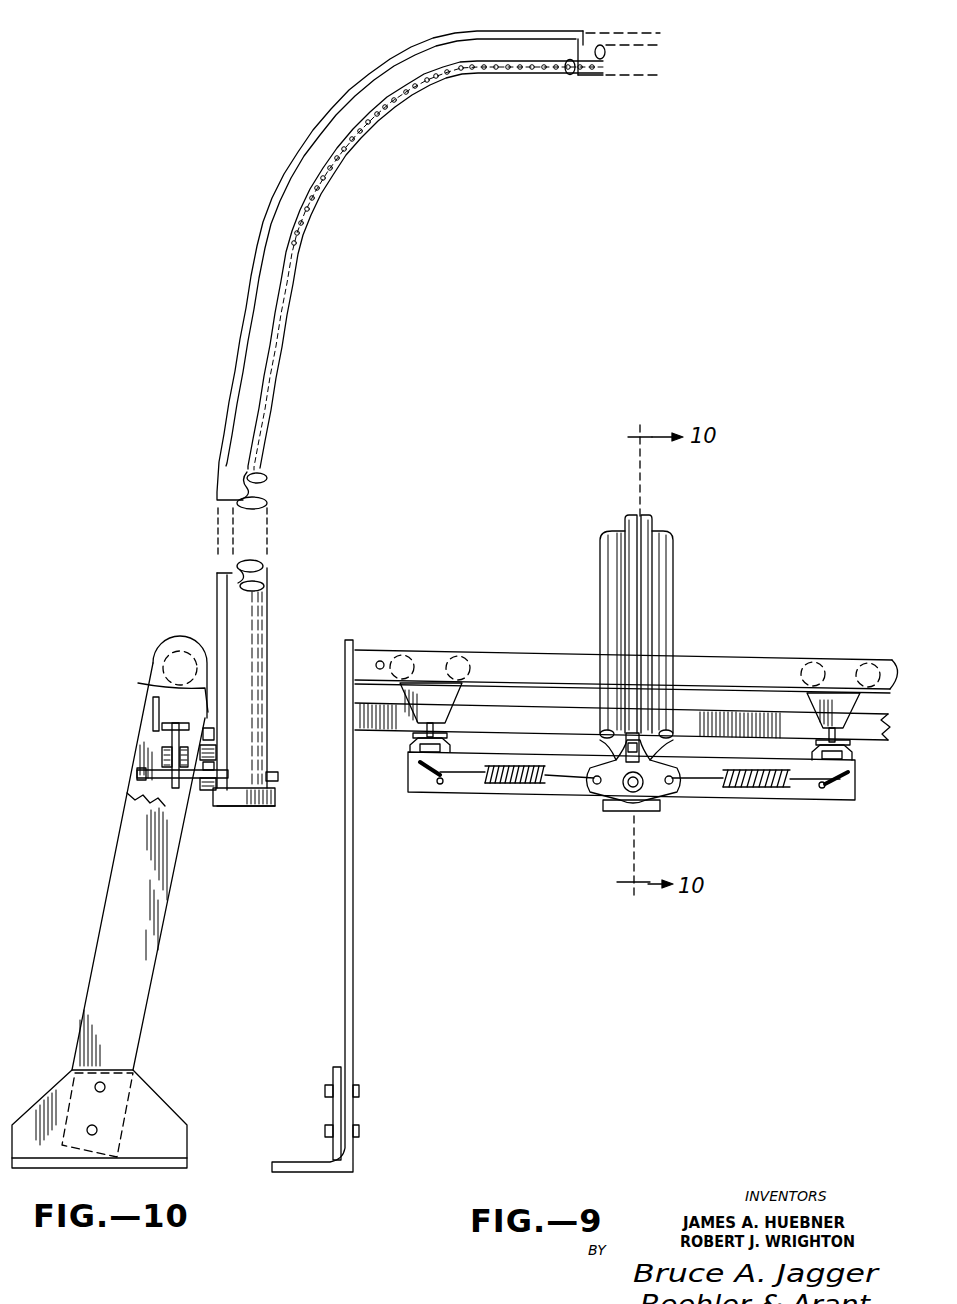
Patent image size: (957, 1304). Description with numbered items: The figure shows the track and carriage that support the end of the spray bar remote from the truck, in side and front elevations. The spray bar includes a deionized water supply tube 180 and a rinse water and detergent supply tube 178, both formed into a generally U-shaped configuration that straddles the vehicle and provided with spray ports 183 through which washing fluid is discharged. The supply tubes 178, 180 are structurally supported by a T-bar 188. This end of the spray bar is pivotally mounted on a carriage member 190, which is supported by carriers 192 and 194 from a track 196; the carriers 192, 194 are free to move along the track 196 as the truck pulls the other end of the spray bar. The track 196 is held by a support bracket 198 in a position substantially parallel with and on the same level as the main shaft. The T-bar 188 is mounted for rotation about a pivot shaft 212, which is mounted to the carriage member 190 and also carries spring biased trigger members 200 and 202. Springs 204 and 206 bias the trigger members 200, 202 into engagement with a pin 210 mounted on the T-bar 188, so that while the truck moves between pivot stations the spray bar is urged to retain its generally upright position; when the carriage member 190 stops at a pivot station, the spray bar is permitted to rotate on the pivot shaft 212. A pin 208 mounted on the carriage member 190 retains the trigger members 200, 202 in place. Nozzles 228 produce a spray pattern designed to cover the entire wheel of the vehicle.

In FIG. 10, the rinse water and detergent supply tube 178 is at (589, 77).
In FIG. 9, the rinse water and detergent supply tube 178 is at (668, 557).
In FIG. 10, the deionized water supply tube 180 is at (536, 74).
In FIG. 9, the deionized water supply tube 180 is at (607, 556).
In FIG. 10, the spray ports 183 is at (580, 78).
In FIG. 10, the T-bar 188 is at (245, 355).
In FIG. 9, the T-bar 188 is at (652, 521).
In FIG. 10, the carriage member 190 is at (138, 735).
In FIG. 9, the carriage member 190 is at (458, 782).
In FIG. 9, the carrier 192 is at (447, 712).
In FIG. 10, the carrier 194 is at (162, 708).
In FIG. 9, the carrier 194 is at (843, 713).
In FIG. 10, the track 196 is at (160, 658).
In FIG. 9, the track 196 is at (688, 667).
In FIG. 10, the support bracket 198 is at (118, 862).
In FIG. 9, the support bracket 198 is at (355, 876).
In FIG. 10, the trigger member 200 is at (223, 753).
In FIG. 9, the trigger member 200 is at (655, 783).
In FIG. 10, the trigger member 202 is at (230, 772).
In FIG. 9, the trigger member 202 is at (602, 784).
In FIG. 9, the spring 204 is at (762, 788).
In FIG. 9, the spring 206 is at (520, 784).
In FIG. 10, the pin 208 is at (154, 687).
In FIG. 9, the pin 208 is at (642, 752).
In FIG. 10, the pin 210 is at (222, 745).
In FIG. 9, the pin 210 is at (620, 752).
In FIG. 10, the pivot shaft 212 is at (232, 778).
In FIG. 9, the pivot shaft 212 is at (634, 816).
In FIG. 10, the nozzles 228 is at (279, 778).